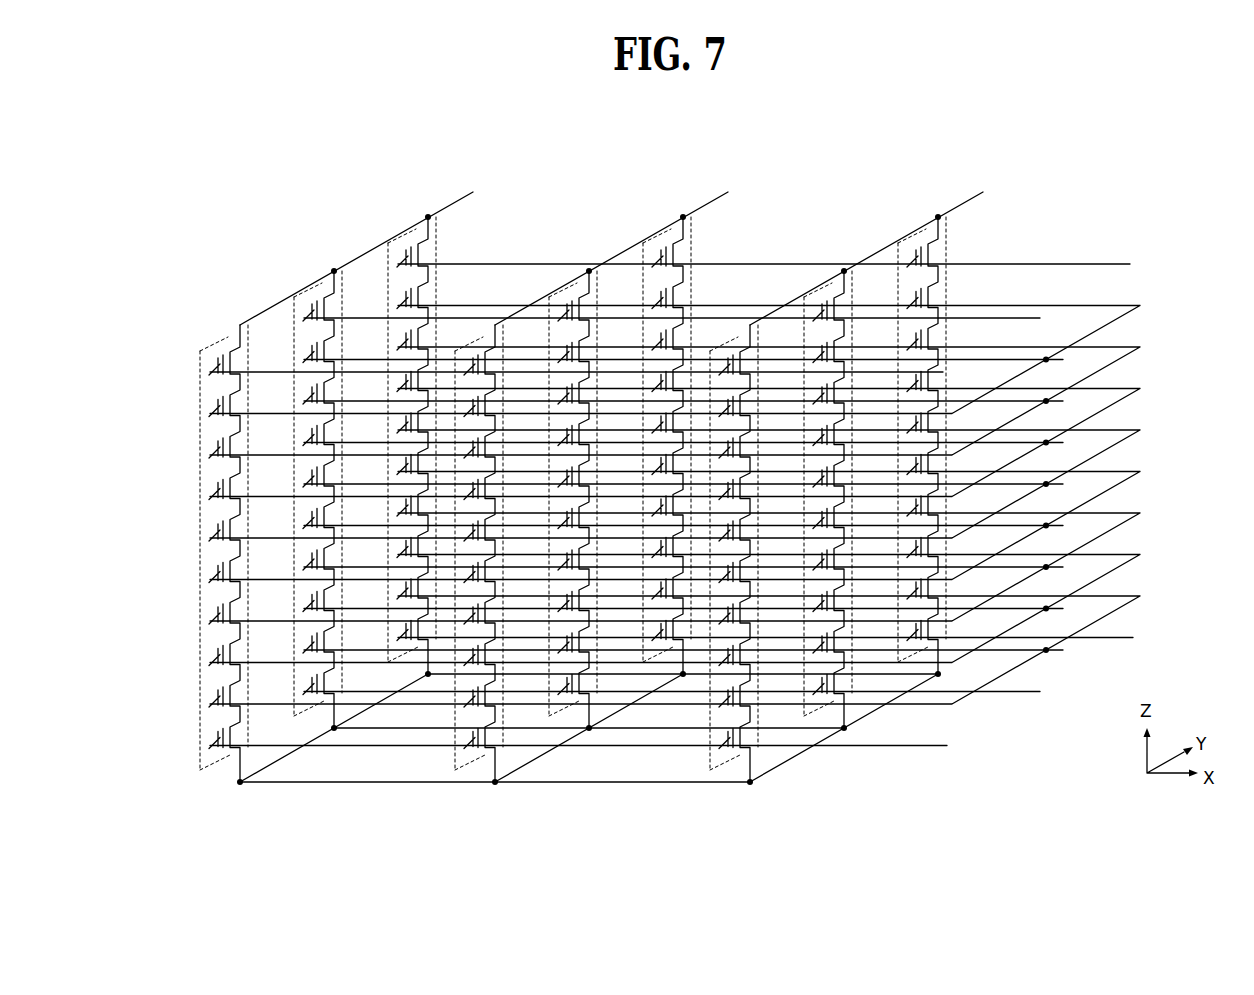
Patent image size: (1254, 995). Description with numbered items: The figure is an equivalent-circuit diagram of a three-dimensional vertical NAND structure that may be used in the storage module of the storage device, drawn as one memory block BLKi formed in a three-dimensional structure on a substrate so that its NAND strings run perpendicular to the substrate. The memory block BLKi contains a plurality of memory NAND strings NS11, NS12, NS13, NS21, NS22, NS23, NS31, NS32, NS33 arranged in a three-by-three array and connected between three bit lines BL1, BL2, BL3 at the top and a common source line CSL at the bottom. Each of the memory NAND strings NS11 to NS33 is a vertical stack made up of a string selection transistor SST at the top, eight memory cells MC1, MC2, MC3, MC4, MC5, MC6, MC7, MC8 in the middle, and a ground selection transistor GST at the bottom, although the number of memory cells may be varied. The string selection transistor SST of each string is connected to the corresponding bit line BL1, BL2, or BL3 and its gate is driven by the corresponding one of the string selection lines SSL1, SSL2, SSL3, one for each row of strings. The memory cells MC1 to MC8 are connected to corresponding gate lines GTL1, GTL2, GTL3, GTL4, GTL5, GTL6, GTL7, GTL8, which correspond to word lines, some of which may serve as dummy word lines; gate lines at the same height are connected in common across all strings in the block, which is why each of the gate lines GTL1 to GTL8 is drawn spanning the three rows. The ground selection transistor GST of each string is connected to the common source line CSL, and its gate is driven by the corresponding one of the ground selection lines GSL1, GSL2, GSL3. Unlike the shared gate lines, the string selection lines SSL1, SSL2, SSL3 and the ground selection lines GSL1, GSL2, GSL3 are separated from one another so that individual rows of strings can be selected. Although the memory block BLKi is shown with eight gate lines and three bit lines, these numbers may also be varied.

The memory block BLKi is at (742, 143).
The bit line BL1 is at (377, 249).
The bit line BL2 is at (632, 249).
The bit line BL3 is at (887, 249).
The memory NAND string NS11 is at (230, 342).
The memory NAND string NS12 is at (480, 345).
The memory NAND string NS13 is at (735, 345).
The memory NAND string NS21 is at (317, 290).
The memory NAND string NS22 is at (571, 290).
The memory NAND string NS23 is at (826, 290).
The memory NAND string NS31 is at (410, 235).
The memory NAND string NS32 is at (665, 235).
The memory NAND string NS33 is at (920, 235).
The string selection transistor SST is at (210, 365).
The memory cell MC1 is at (210, 697).
The memory cell MC2 is at (210, 656).
The memory cell MC3 is at (210, 614).
The memory cell MC4 is at (210, 572).
The memory cell MC5 is at (210, 531).
The memory cell MC6 is at (210, 490).
The memory cell MC7 is at (210, 448).
The memory cell MC8 is at (210, 406).
The ground selection transistor GST is at (210, 738).
The string selection line SSL1 is at (604, 375).
The string selection line SSL2 is at (698, 321).
The string selection line SSL3 is at (791, 267).
The gate line GTL1 is at (675, 650).
The gate line GTL2 is at (675, 609).
The gate line GTL3 is at (675, 567).
The gate line GTL4 is at (675, 526).
The gate line GTL5 is at (675, 484).
The gate line GTL6 is at (675, 443).
The gate line GTL7 is at (675, 401).
The gate line GTL8 is at (675, 360).
The ground selection line GSL1 is at (605, 750).
The ground selection line GSL2 is at (699, 696).
The ground selection line GSL3 is at (793, 642).
The common source line CSL is at (589, 728).